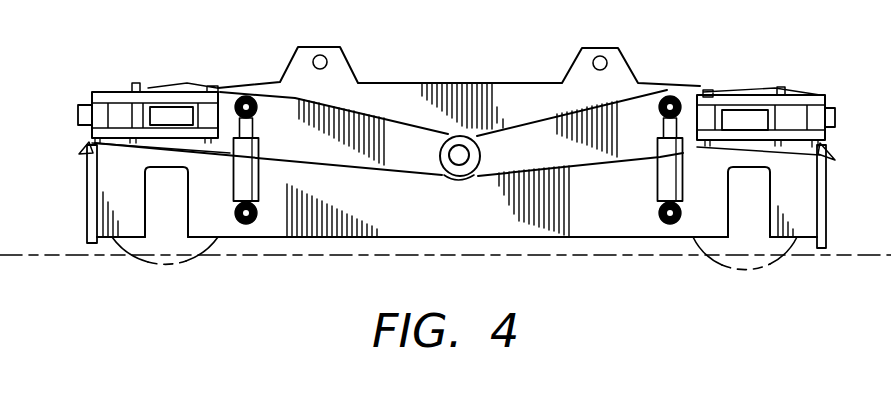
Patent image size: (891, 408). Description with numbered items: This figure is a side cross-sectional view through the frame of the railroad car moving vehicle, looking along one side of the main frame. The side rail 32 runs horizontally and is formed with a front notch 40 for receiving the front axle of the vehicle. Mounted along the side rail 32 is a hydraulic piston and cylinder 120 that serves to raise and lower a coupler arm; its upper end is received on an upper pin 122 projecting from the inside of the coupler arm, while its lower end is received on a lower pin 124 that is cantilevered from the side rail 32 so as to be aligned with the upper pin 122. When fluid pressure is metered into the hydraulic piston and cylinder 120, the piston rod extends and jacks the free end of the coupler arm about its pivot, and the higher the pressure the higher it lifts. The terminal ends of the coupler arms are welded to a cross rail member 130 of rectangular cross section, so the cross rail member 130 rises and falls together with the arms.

The side rail 32 is at (517, 100).
The front notch 40 is at (147, 218).
The hydraulic piston and cylinder 120 is at (665, 182).
The upper pin 122 is at (668, 95).
The lower pin 124 is at (670, 225).
The cross rail member 130 is at (745, 118).